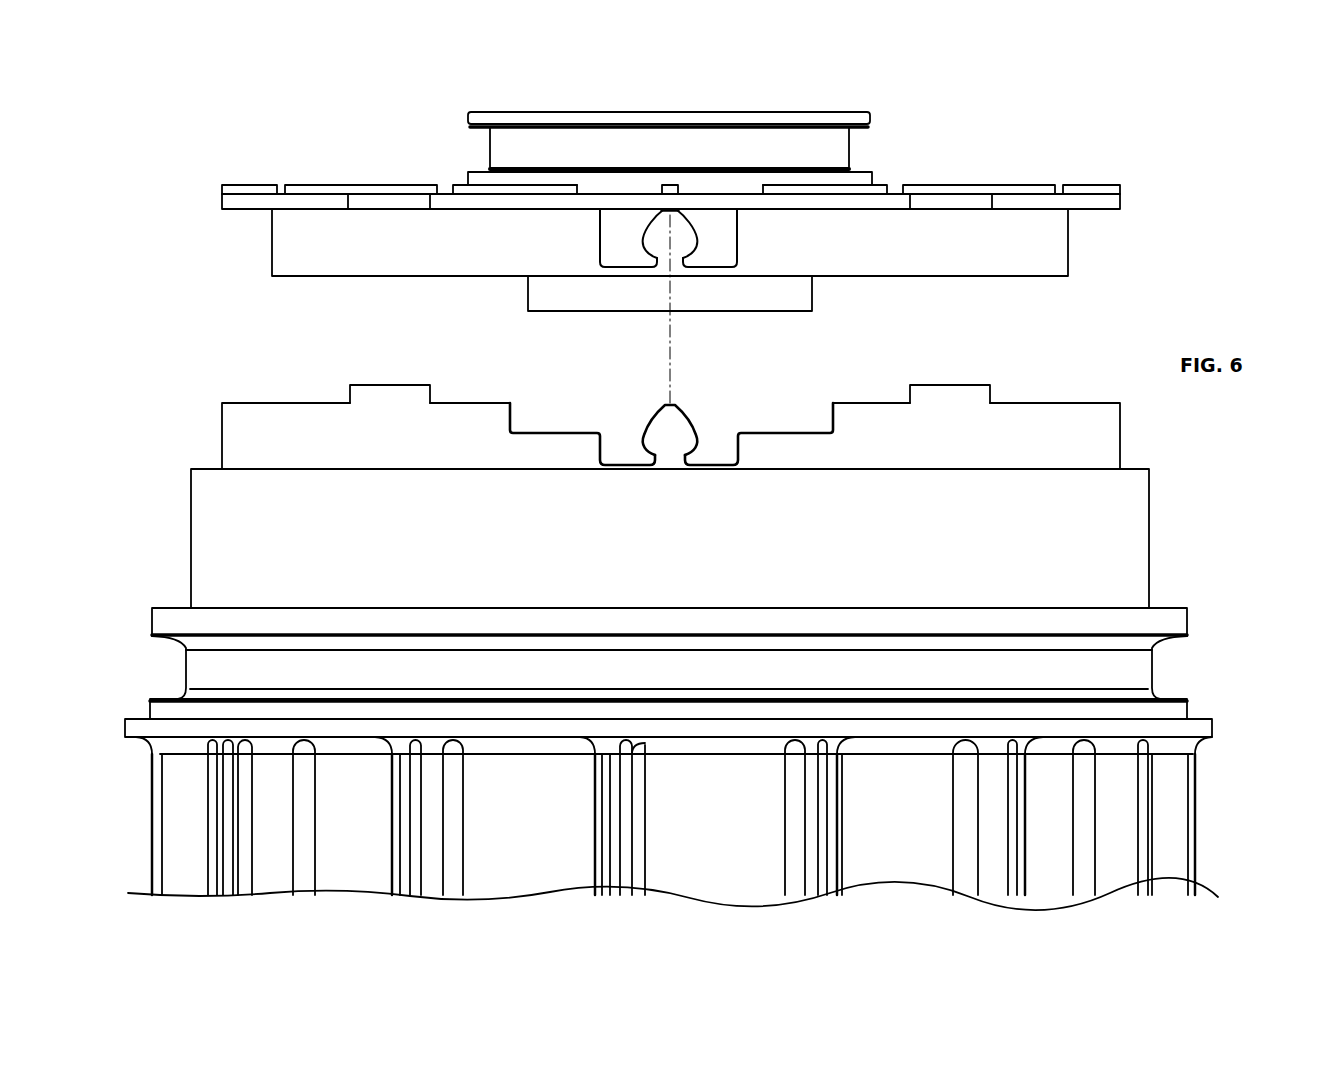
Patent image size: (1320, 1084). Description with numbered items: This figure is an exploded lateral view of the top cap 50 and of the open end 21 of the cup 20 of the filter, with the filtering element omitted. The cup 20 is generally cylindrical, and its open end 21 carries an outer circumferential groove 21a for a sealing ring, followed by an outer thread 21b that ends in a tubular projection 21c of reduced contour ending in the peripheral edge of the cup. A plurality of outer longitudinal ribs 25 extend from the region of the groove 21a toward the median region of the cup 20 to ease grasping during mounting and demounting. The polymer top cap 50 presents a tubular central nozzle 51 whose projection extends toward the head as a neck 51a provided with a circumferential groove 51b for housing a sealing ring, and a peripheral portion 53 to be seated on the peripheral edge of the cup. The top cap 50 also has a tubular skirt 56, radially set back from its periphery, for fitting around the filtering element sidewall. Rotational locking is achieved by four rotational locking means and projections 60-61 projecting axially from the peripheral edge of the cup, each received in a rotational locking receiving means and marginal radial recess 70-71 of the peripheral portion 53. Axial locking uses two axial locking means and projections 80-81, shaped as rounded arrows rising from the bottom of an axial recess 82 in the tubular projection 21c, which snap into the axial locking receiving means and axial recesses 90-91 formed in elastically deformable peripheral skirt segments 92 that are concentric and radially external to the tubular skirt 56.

The cup 20 is at (714, 814).
The open end 21 is at (698, 522).
The outer circumferential groove 21a is at (1166, 672).
The outer thread 21b is at (1161, 518).
The tubular projection 21c is at (1131, 424).
The outer longitudinal ribs 25 is at (782, 810).
The top cap 50 is at (641, 224).
The central nozzle 51 is at (751, 240).
The neck 51a is at (877, 114).
The circumferential groove 51b is at (858, 153).
The peripheral portion 53 is at (242, 220).
The tubular skirt 56 is at (1080, 240).
The rotational locking means and projection 60-61 is at (384, 374).
The rotational locking receiving means and marginal radial recess 70-71 is at (391, 201).
The axial locking means and projection 80-81 is at (644, 415).
The axial recess 82 is at (711, 447).
The axial locking receiving means and axial recess 90-91 is at (682, 245).
The peripheral skirt segment 92 is at (590, 242).